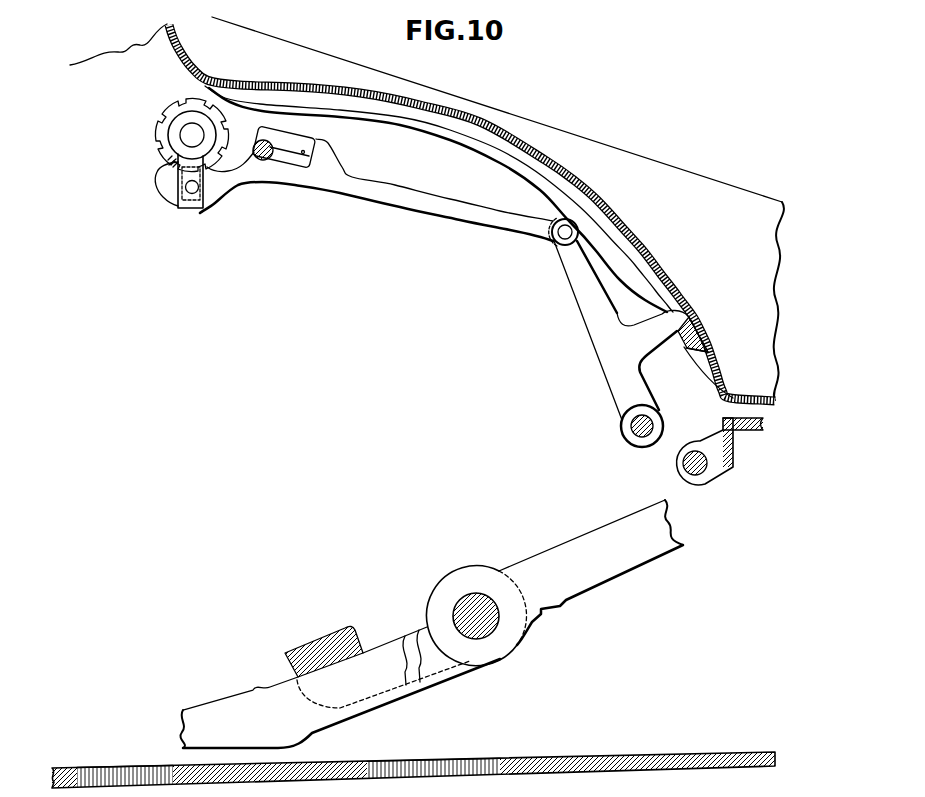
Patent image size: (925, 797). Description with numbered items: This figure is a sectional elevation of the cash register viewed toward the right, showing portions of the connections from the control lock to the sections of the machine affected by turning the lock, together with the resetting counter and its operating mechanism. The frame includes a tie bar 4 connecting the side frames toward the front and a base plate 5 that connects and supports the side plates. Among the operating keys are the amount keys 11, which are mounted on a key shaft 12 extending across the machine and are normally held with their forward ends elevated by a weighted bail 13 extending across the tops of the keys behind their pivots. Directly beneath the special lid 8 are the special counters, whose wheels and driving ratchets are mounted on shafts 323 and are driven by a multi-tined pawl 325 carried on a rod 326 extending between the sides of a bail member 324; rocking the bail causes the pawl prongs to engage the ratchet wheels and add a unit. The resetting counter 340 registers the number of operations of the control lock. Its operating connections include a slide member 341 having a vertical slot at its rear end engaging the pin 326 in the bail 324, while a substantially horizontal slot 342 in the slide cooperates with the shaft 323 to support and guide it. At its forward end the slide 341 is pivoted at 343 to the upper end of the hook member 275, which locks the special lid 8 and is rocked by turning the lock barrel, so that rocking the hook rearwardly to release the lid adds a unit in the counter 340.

The tie bar 4 is at (737, 440).
The base plate 5 is at (582, 740).
The special lid 8 is at (309, 86).
The amount keys 11 is at (628, 523).
The key shaft 12 is at (480, 592).
The weighted bail 13 is at (344, 630).
The hook member 275 is at (635, 334).
The shaft 323 is at (272, 142).
The bail member 324 is at (190, 208).
The multi-tined pawl 325 is at (160, 179).
The rod 326 is at (198, 187).
The resetting counter 340 is at (160, 117).
The slide member 341 is at (260, 182).
The horizontal slot 342 is at (304, 152).
The pivot 343 is at (563, 236).